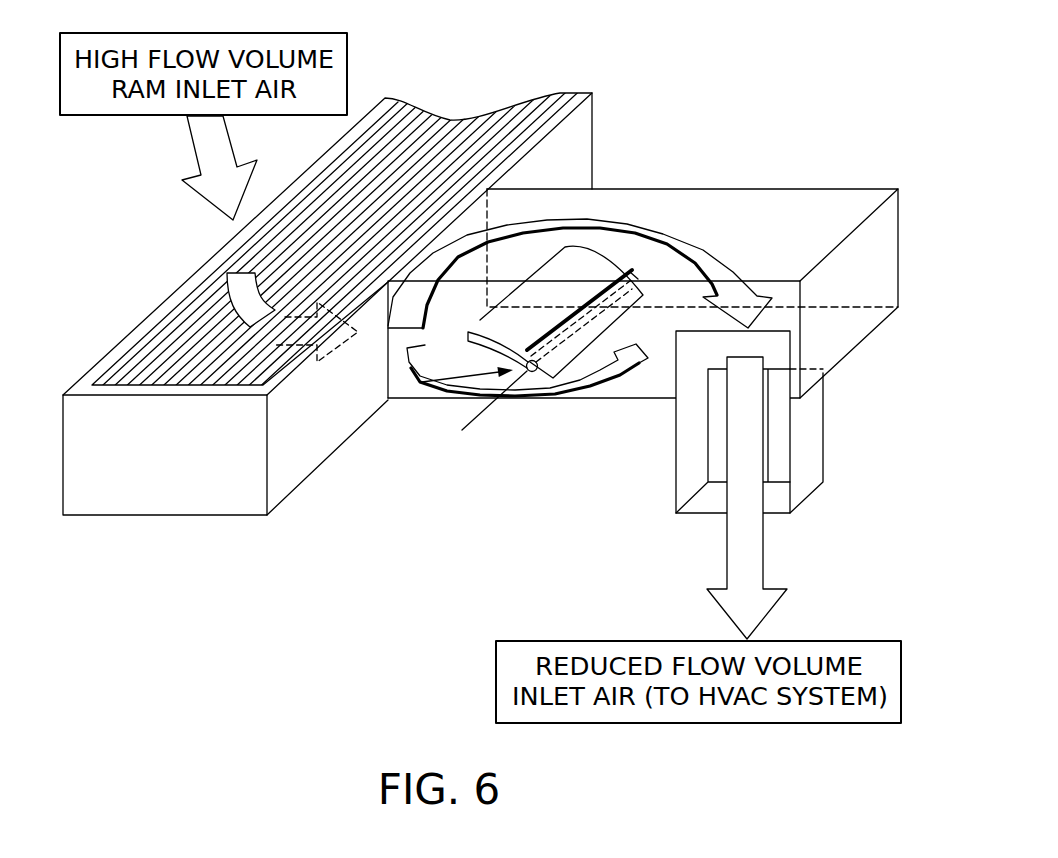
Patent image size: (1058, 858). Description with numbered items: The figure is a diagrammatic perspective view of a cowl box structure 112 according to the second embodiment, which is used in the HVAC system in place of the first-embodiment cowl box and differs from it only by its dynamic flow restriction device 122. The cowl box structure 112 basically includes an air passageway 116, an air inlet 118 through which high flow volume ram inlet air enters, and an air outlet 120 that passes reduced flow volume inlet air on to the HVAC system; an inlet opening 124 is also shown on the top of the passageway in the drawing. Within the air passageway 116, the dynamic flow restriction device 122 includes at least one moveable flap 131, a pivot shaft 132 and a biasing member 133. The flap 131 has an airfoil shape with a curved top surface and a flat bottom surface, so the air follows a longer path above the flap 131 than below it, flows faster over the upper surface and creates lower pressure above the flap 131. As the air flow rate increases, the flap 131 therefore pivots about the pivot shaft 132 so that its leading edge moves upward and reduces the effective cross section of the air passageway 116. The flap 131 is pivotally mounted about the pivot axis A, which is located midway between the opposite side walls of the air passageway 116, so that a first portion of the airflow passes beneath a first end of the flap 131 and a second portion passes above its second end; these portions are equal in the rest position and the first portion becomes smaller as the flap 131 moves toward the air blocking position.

The cowl box structure 112 is at (795, 65).
The air passageway 116 is at (152, 463).
The air inlet 118 is at (448, 220).
The air outlet 120 is at (677, 360).
The dynamic flow restriction device 122 is at (440, 377).
The inlet opening grille 124 is at (187, 330).
The moveable flap 131 is at (594, 254).
The pivot shaft 132 is at (538, 371).
The biasing member 133 is at (545, 343).
The pivot axis A is at (470, 423).